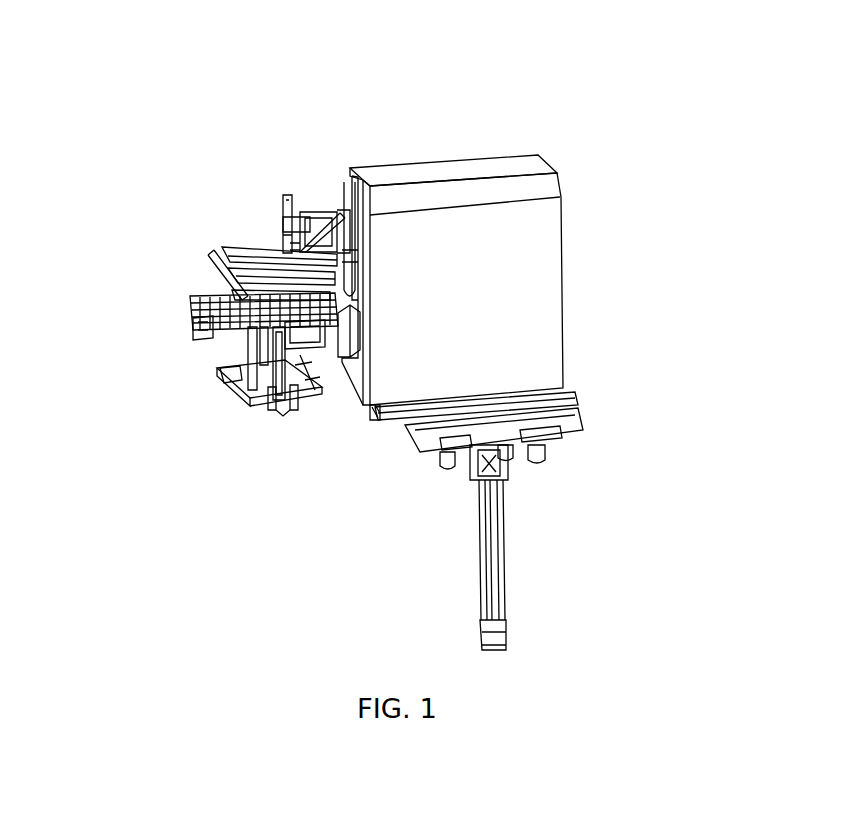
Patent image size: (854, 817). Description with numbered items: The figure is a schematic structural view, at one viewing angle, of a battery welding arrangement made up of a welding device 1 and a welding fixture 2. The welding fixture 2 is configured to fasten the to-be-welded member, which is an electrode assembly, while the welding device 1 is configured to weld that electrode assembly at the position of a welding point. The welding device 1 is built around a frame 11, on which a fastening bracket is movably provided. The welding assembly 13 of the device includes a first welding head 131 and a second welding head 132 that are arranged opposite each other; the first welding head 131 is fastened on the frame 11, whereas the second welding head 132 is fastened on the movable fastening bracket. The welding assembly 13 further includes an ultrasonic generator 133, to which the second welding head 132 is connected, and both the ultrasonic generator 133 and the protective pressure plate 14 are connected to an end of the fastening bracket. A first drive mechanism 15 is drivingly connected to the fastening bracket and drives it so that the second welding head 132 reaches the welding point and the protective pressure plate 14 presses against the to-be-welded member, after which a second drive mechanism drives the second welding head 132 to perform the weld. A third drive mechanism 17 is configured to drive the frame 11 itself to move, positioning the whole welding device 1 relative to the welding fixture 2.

The welding device 1 is at (574, 222).
The ultrasonic generator 133 is at (428, 176).
The frame 11 is at (572, 372).
The first drive mechanism 15 is at (371, 447).
The third drive mechanism 17 is at (493, 500).
The welding assembly 13 is at (312, 187).
The first welding head 131 is at (290, 197).
The protective pressure plate 14 is at (232, 212).
The second welding head 132 is at (292, 408).
The welding fixture 2 is at (207, 342).